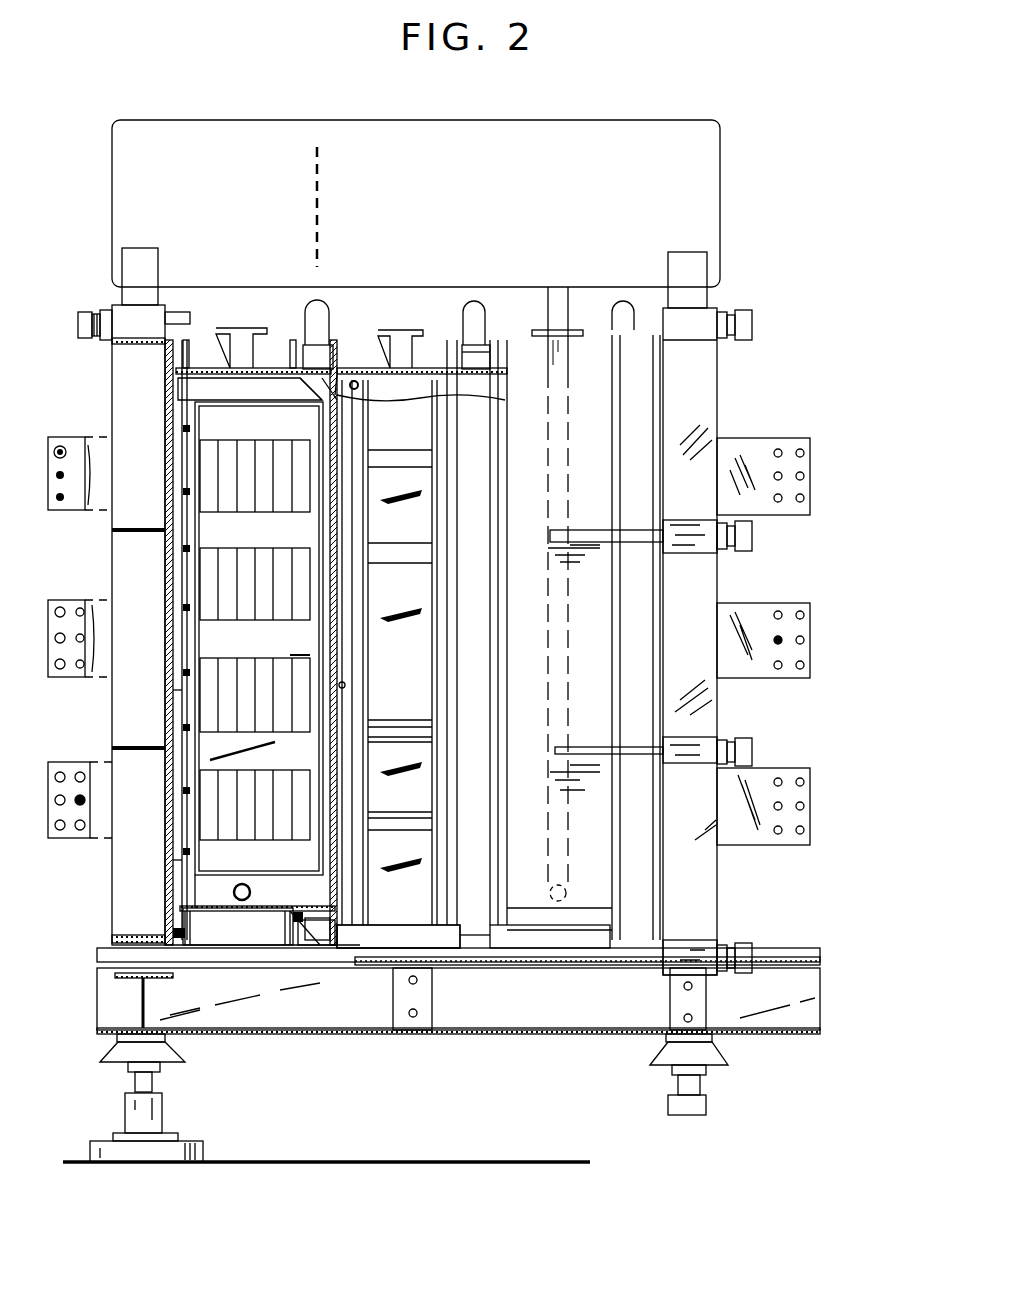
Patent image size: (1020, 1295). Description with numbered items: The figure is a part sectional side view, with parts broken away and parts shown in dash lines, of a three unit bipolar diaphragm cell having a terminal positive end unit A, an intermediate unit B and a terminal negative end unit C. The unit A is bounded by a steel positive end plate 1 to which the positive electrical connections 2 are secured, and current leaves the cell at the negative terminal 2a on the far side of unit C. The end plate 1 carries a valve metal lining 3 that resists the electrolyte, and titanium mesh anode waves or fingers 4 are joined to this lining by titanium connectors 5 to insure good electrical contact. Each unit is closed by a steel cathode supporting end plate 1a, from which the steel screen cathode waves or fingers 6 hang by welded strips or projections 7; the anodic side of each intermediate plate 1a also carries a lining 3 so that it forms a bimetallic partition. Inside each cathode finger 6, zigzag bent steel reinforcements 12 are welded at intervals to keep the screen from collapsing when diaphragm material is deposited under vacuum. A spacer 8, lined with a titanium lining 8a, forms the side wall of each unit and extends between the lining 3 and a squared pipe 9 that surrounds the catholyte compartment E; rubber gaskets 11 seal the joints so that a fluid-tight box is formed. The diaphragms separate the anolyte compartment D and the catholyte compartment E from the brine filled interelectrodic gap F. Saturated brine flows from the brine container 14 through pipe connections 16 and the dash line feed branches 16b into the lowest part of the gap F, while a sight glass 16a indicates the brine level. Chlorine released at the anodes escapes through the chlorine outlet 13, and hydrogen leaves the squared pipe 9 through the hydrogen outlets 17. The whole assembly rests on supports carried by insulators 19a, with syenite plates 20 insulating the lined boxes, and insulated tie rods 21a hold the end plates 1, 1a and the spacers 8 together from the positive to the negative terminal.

The positive end plate 1 is at (178, 735).
The cathode supporting end plate 1a is at (340, 648).
The positive electrical connections 2 is at (80, 445).
The negative terminal 2a is at (805, 418).
The valve metal lining 3 is at (62, 52).
The anode waves or fingers 4 is at (210, 875).
The titanium connectors 5 is at (175, 862).
The cathode waves or fingers 6 is at (192, 432).
The welded strips or projections 7 is at (330, 528).
The spacer 8 is at (238, 912).
The titanium lining of spacer 8a is at (270, 912).
The squared pipe 9 is at (318, 350).
The rubber gaskets 11 is at (300, 912).
The zigzag bent steel reinforcements 12 is at (265, 450).
The chlorine outlet 13 is at (242, 378).
The brine container 14 is at (414, 232).
The pipe connections 16 is at (548, 325).
The sight glass 16a is at (350, 688).
The feed branches 16b is at (568, 420).
The hydrogen outlets 17 is at (305, 325).
The insulators 19a is at (170, 1055).
The syenite plates 20 is at (97, 957).
The tie rods 21a is at (580, 395).
The terminal positive end unit A is at (245, 905).
The intermediate unit B is at (392, 926).
The terminal negative end unit C is at (555, 910).
The anolyte compartment D is at (172, 700).
The catholyte compartment E is at (296, 643).
The interelectrodic gap F is at (235, 756).